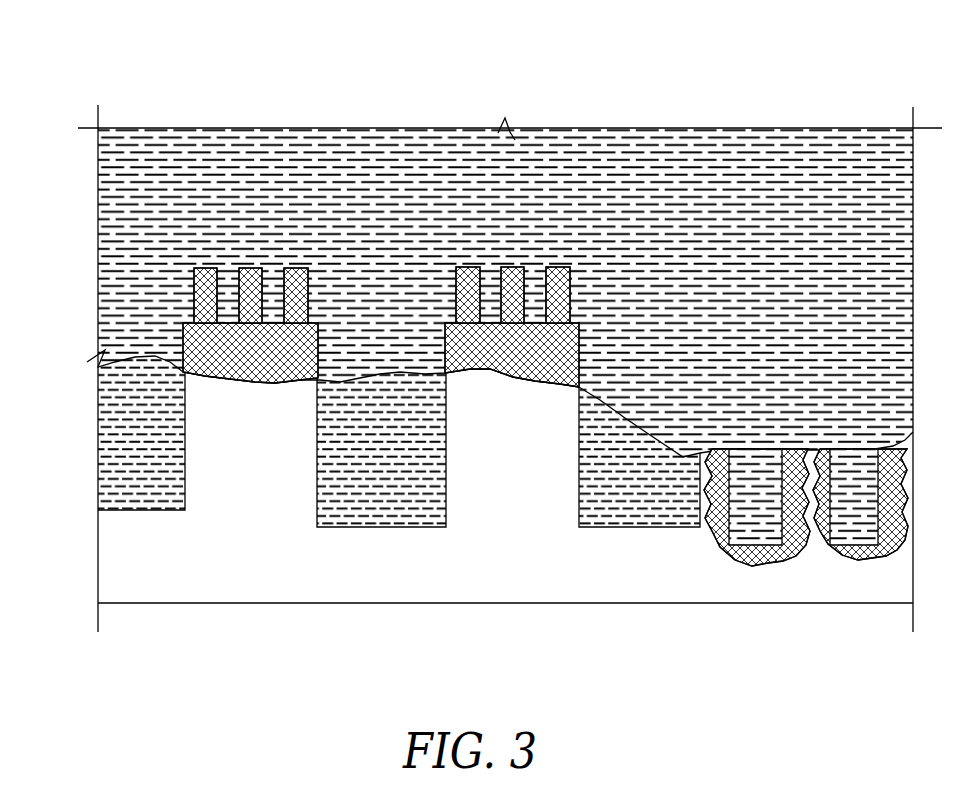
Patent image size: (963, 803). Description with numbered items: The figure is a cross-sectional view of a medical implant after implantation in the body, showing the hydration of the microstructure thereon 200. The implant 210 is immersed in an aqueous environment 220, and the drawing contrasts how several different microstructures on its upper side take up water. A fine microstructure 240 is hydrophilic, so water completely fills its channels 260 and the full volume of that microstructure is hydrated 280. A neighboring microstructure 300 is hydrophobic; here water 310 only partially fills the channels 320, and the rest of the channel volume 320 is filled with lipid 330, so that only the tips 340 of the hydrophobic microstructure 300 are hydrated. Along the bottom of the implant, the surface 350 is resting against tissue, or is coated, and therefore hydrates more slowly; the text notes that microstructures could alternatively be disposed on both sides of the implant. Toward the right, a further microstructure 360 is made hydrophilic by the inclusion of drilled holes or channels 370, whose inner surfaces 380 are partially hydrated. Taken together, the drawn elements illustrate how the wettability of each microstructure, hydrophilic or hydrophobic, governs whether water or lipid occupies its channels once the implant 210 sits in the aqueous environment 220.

The hydration of the microstructure 200 is at (822, 67).
The implant 210 is at (528, 560).
The aqueous environment 220 is at (247, 138).
The fine microstructure 240 is at (570, 295).
The channels 260 is at (533, 293).
The hydrated 280 is at (500, 293).
The microstructure 300 is at (210, 446).
The water 310 is at (398, 358).
The channels 320 is at (425, 450).
The lipid 330 is at (395, 500).
The tips 340 is at (183, 342).
The surface 350 is at (212, 605).
The microstructure 360 is at (695, 493).
The drilled holes or channels 370 is at (848, 560).
The inner surfaces 380 is at (755, 565).